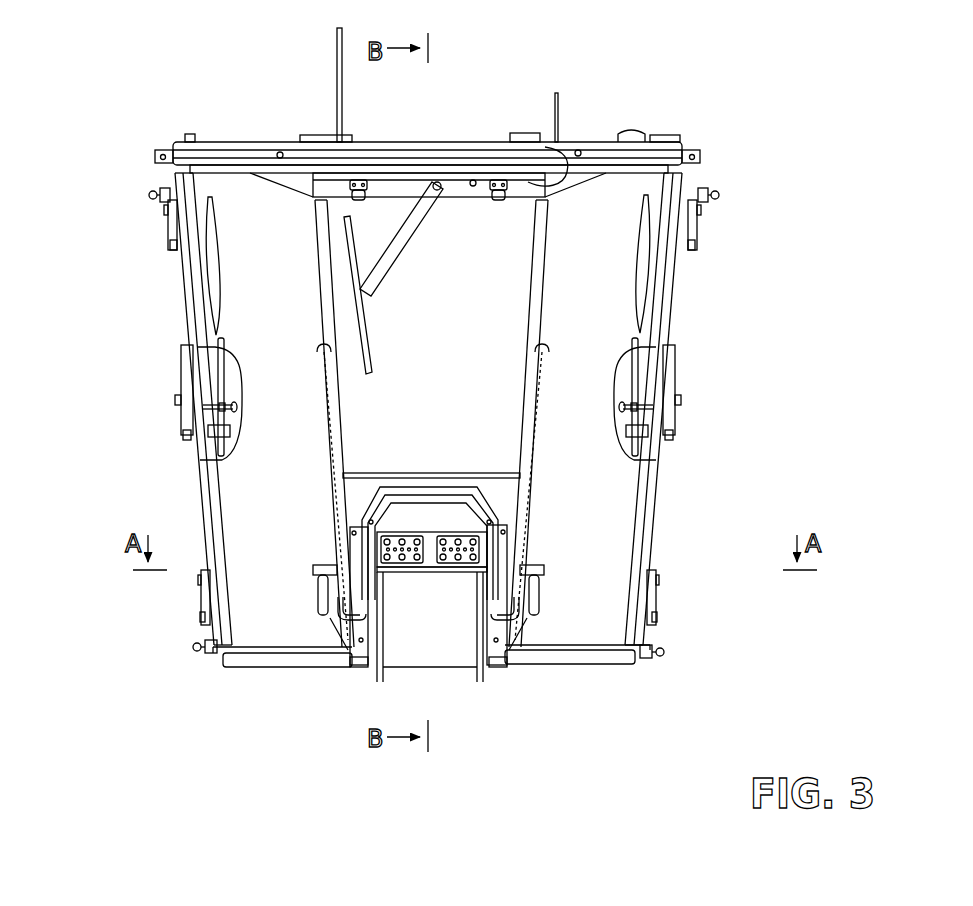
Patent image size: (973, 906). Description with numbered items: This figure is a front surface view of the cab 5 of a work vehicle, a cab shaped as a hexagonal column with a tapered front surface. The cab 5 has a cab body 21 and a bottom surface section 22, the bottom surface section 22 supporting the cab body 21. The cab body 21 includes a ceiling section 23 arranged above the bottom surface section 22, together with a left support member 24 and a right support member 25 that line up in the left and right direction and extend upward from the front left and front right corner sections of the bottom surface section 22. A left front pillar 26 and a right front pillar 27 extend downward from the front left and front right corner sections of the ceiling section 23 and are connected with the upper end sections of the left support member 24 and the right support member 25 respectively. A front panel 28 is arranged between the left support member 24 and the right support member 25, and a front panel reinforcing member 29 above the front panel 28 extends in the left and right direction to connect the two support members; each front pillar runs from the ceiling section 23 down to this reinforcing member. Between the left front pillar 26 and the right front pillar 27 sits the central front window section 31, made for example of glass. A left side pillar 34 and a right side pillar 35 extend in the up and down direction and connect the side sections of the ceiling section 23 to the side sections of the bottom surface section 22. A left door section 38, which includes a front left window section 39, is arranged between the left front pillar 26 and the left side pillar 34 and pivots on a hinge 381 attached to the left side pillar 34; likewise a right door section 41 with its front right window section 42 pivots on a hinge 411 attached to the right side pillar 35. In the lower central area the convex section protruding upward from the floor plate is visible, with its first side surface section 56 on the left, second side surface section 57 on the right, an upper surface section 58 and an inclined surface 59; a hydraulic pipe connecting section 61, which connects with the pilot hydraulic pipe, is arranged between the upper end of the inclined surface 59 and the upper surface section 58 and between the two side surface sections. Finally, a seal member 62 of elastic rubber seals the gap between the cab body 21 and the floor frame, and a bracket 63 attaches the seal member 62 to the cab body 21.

The cab 5 is at (127, 114).
The cab body 21 is at (143, 449).
The bottom surface section 22 is at (268, 678).
The ceiling section 23 is at (502, 130).
The left support member 24 is at (537, 485).
The right support member 25 is at (337, 525).
The left front pillar 26 is at (533, 303).
The right front pillar 27 is at (322, 297).
The front panel 28 is at (503, 500).
The front panel reinforcing member 29 is at (412, 470).
The central front window section 31 is at (417, 277).
The left side pillar 34 is at (672, 272).
The right side pillar 35 is at (185, 272).
The left door section 38 is at (603, 369).
The front left window section 39 is at (585, 409).
The right door section 41 is at (252, 369).
The front right window section 42 is at (272, 413).
The first side surface section 56 is at (468, 625).
The second side surface section 57 is at (389, 625).
The upper surface section 58 is at (453, 552).
The inclined surface 59 is at (337, 617).
The hydraulic pipe connecting section 61 is at (430, 568).
The seal member 62 is at (527, 596).
The bracket 63 is at (430, 512).
The hinge 381 is at (693, 225).
The hinge 411 is at (170, 224).